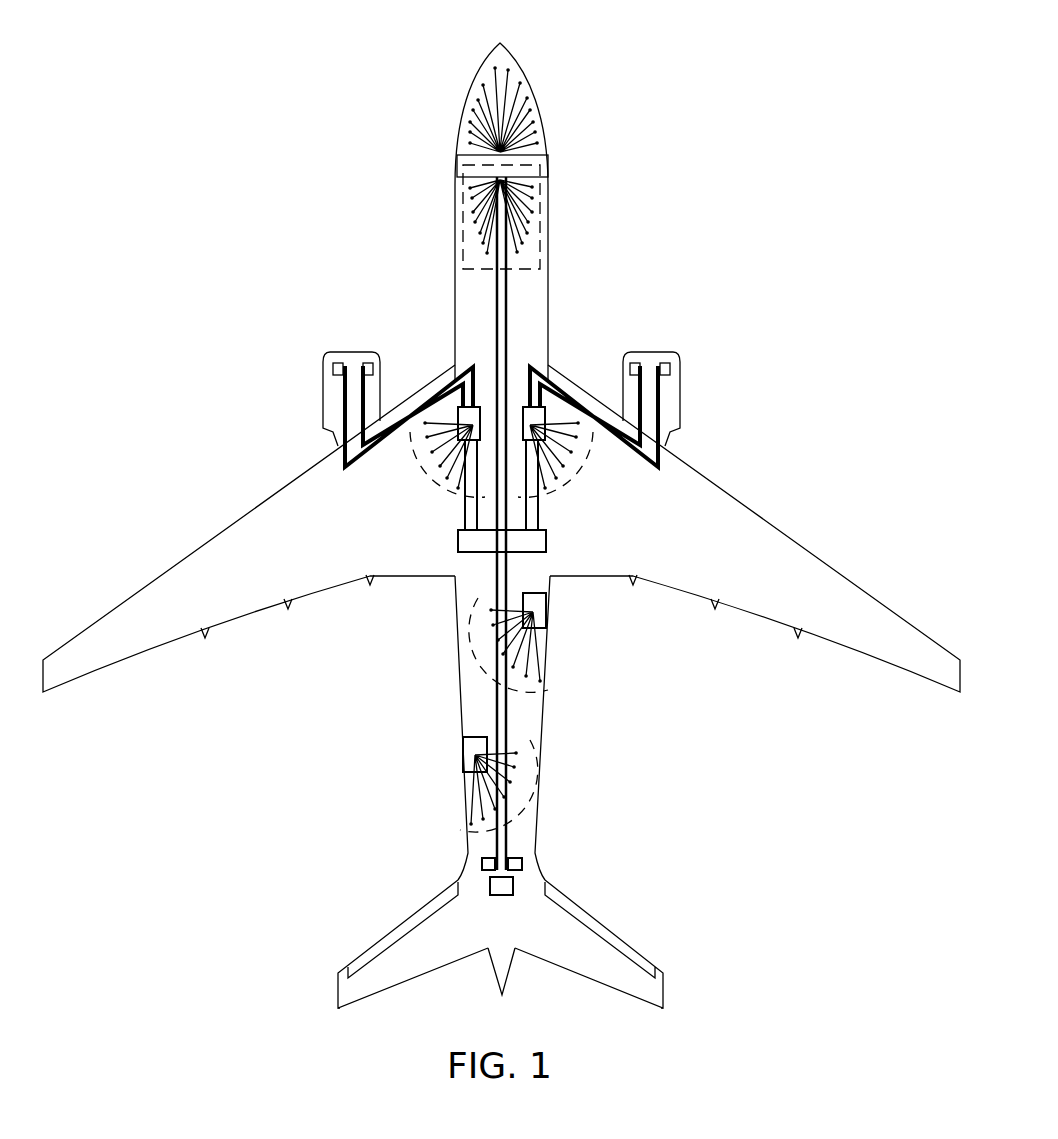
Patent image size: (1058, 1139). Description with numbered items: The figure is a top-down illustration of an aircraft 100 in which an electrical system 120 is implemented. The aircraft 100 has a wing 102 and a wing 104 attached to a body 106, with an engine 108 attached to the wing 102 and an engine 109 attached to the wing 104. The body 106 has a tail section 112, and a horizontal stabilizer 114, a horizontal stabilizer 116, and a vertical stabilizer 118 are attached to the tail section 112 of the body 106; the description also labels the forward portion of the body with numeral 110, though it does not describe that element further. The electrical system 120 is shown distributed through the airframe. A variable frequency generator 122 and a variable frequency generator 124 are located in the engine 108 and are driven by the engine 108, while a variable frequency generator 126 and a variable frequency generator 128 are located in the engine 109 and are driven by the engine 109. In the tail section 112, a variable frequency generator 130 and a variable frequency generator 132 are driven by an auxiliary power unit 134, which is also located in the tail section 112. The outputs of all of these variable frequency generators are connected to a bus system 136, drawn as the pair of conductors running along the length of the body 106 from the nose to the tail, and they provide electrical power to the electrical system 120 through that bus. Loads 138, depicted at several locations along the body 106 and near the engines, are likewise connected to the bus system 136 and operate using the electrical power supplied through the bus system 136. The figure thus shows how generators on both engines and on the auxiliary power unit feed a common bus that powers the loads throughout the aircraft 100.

The aircraft 100 is at (378, 84).
The wing 102 is at (163, 572).
The wing 104 is at (840, 572).
The body 106 is at (548, 738).
The engine 108 is at (340, 352).
The engine 109 is at (665, 352).
The nose section 110 is at (548, 282).
The tail section 112 is at (517, 955).
The horizontal stabilizer 114 is at (365, 957).
The horizontal stabilizer 116 is at (640, 957).
The vertical stabilizer 118 is at (493, 1005).
The electrical system 120 is at (714, 272).
The variable frequency generator 122 is at (333, 366).
The variable frequency generator 124 is at (366, 362).
The variable frequency generator 126 is at (635, 362).
The variable frequency generator 128 is at (670, 368).
The variable frequency generator 130 is at (480, 864).
The variable frequency generator 132 is at (524, 864).
The auxiliary power unit 134 is at (498, 896).
The bus system 136 is at (493, 317).
The loads 138 is at (540, 203).